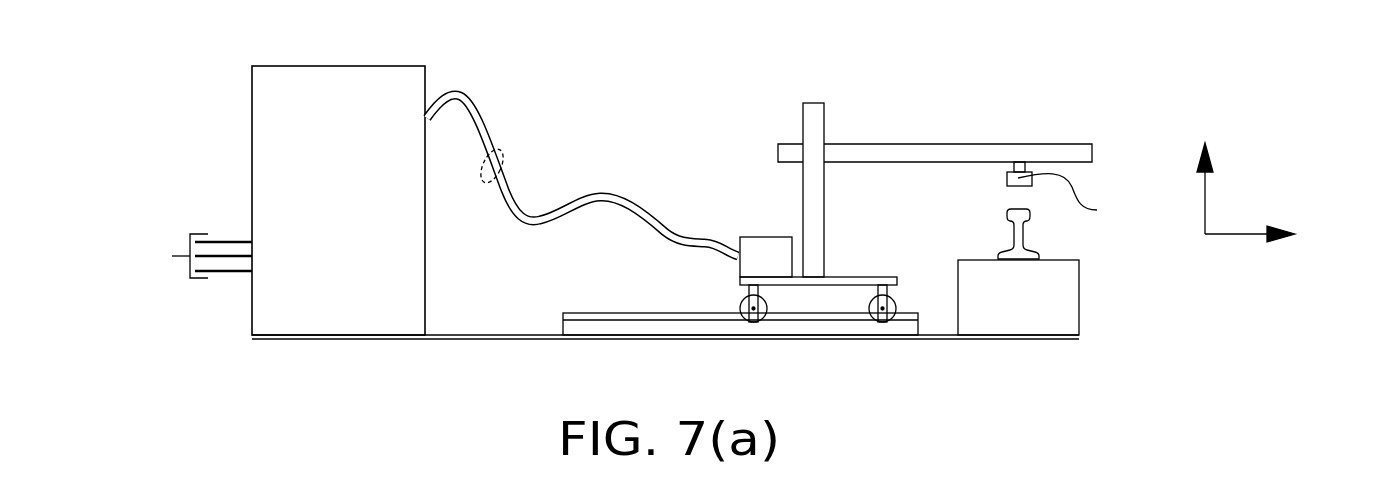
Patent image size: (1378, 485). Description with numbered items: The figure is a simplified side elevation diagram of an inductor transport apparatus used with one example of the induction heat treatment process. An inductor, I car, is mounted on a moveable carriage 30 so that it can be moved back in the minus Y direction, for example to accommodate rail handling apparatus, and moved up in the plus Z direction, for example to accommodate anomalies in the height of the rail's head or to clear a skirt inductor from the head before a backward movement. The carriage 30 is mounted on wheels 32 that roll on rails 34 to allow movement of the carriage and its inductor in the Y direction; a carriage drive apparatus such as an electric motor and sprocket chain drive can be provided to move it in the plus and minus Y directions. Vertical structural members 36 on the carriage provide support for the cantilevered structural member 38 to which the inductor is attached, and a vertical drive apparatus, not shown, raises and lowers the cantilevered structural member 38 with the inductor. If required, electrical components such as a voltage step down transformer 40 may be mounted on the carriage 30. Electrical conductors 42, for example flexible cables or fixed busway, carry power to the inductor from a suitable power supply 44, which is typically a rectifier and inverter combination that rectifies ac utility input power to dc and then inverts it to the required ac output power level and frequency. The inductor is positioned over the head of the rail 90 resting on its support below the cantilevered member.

The carriage 30 is at (682, 261).
The wheels 32 is at (740, 309).
The rails 34 is at (568, 328).
The vertical structural members 36 is at (815, 192).
The cantilevered structural member 38 is at (916, 155).
The voltage step down transformer 40 is at (782, 267).
The electrical conductors 42 is at (500, 148).
The power supply 44 is at (354, 201).
The rail 90 is at (990, 227).